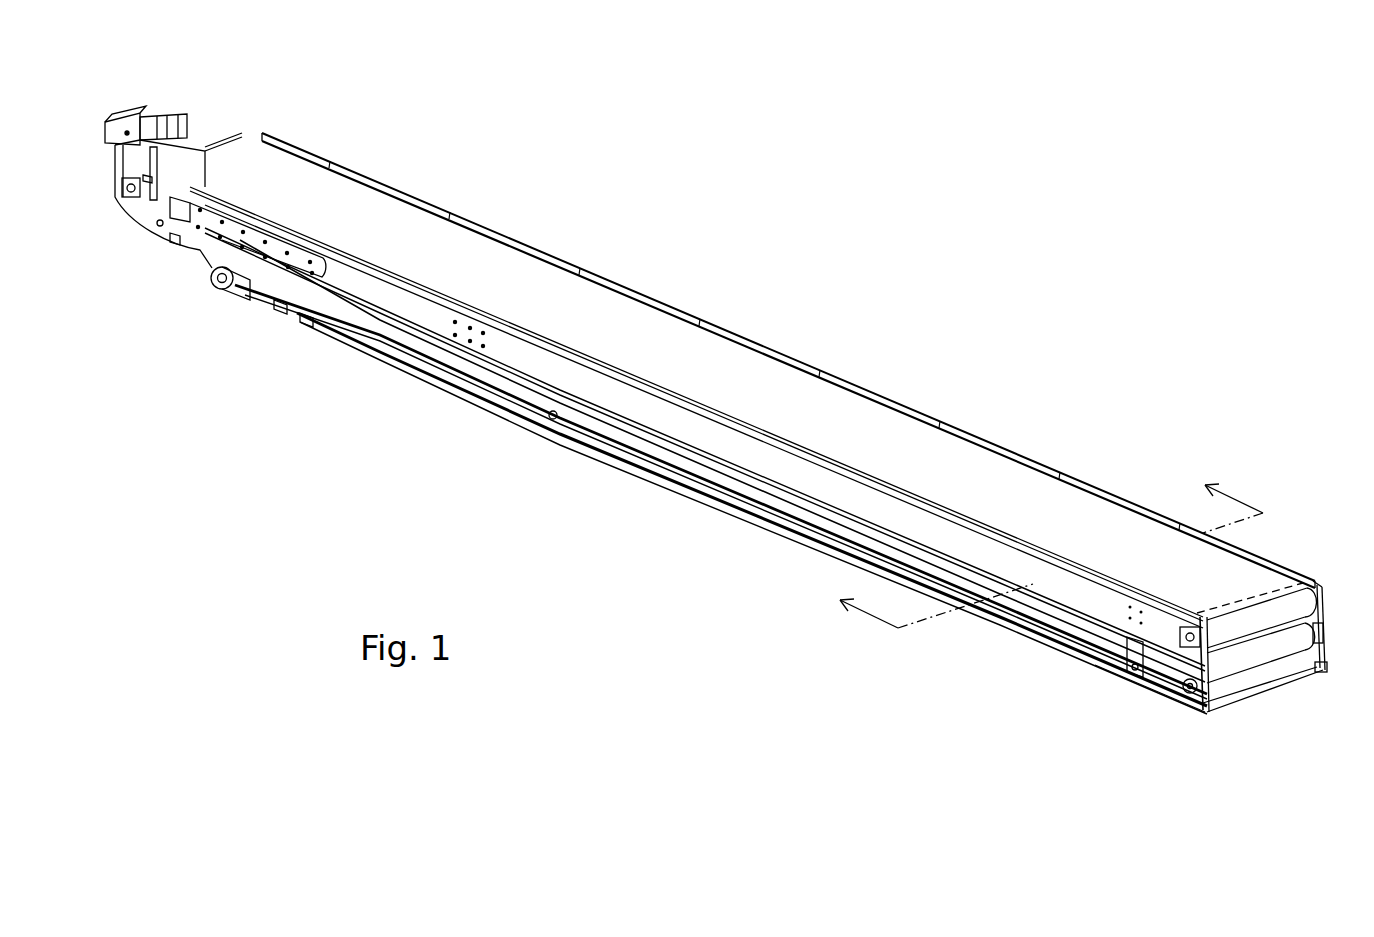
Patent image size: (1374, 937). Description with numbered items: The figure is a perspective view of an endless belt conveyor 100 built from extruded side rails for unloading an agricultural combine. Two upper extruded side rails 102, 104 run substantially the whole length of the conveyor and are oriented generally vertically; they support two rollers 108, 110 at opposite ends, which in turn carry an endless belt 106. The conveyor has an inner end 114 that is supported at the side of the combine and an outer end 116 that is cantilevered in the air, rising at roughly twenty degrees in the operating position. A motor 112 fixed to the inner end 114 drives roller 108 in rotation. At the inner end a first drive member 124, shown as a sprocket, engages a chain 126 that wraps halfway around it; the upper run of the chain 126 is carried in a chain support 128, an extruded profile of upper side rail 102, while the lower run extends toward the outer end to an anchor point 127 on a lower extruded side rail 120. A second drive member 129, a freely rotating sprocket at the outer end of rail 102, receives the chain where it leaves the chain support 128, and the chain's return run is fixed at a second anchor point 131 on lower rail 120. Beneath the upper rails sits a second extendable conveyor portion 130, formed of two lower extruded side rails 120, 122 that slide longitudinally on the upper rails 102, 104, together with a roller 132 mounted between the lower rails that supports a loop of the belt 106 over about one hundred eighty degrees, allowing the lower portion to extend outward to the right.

The endless belt conveyor 100 is at (739, 411).
The upper extruded side rail 102 is at (745, 440).
The upper extruded side rail 104 is at (1323, 605).
The endless belt 106 is at (932, 445).
The roller 108 is at (1253, 605).
The roller 110 is at (241, 133).
The motor 112 is at (162, 115).
The inner end 114 is at (283, 115).
The outer end 116 is at (1208, 720).
The lower extruded side rail 120 is at (1095, 670).
The lower extruded side rail 122 is at (1325, 672).
The first drive member 124 is at (222, 292).
The chain 126 is at (492, 390).
The anchor point 127 is at (279, 305).
The chain support 128 is at (618, 430).
The second drive member 129 is at (1140, 690).
The second extendable conveyor portion 130 is at (813, 571).
The anchor point 131 is at (315, 325).
The roller 132 is at (1248, 690).